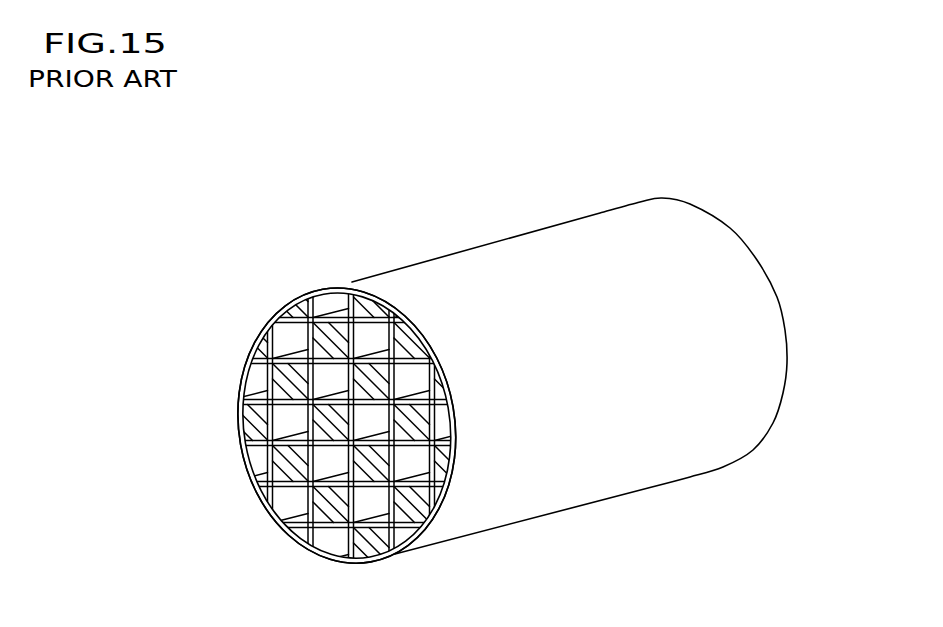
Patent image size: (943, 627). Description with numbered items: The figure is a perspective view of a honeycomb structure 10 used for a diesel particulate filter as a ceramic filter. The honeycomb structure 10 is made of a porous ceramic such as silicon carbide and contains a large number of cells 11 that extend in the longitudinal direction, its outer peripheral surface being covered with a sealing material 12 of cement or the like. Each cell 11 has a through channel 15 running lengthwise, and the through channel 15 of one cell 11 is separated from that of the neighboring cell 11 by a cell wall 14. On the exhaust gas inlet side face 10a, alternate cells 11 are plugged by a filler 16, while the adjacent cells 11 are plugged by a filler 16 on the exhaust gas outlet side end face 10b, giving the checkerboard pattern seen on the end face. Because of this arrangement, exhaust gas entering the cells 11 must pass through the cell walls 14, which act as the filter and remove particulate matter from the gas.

The honeycomb structure 10 is at (522, 221).
The exhaust gas inlet side face 10a is at (320, 320).
The exhaust gas outlet side end face 10b is at (730, 228).
The cell 11 is at (285, 330).
The sealing material 12 is at (358, 282).
The cell wall 14 is at (243, 388).
The through channel 15 is at (250, 460).
The filler 16 is at (442, 393).